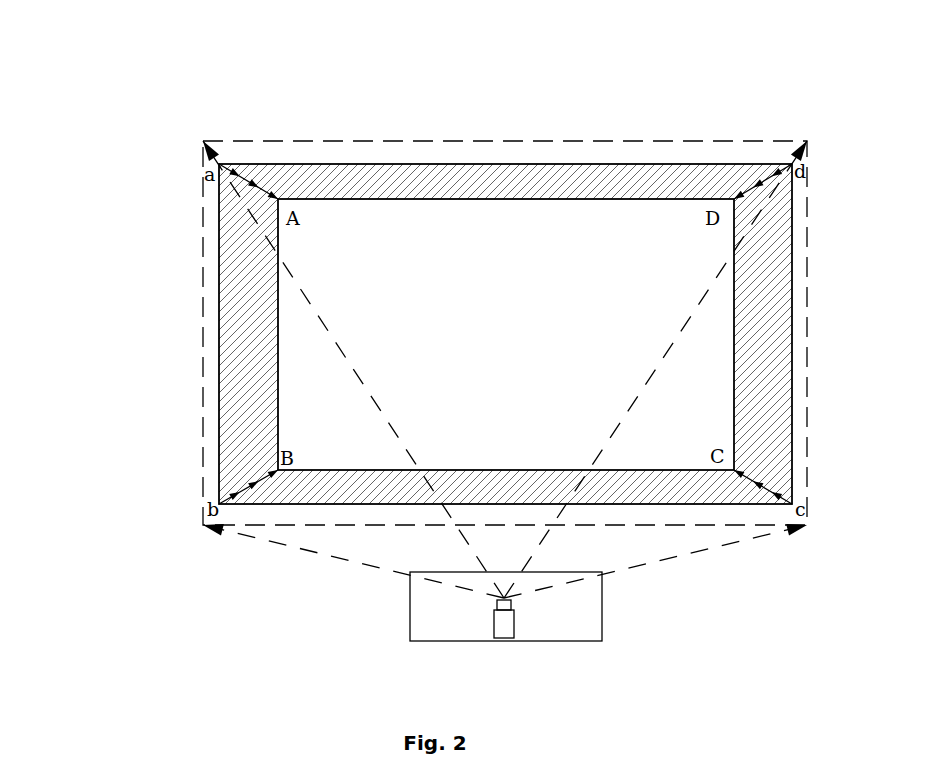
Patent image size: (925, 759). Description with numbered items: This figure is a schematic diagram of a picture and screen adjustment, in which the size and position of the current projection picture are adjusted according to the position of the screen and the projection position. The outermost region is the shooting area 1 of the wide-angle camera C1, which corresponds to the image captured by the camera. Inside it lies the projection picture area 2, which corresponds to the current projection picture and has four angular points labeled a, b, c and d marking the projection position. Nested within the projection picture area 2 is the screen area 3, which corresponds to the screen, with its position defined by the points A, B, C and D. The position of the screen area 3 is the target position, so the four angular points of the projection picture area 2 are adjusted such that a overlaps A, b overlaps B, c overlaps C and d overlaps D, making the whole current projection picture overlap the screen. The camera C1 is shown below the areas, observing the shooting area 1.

The shooting area 1 is at (424, 333).
The projection picture area 2 is at (464, 265).
The screen area 3 is at (506, 277).
The wide-angle camera C1 is at (506, 625).